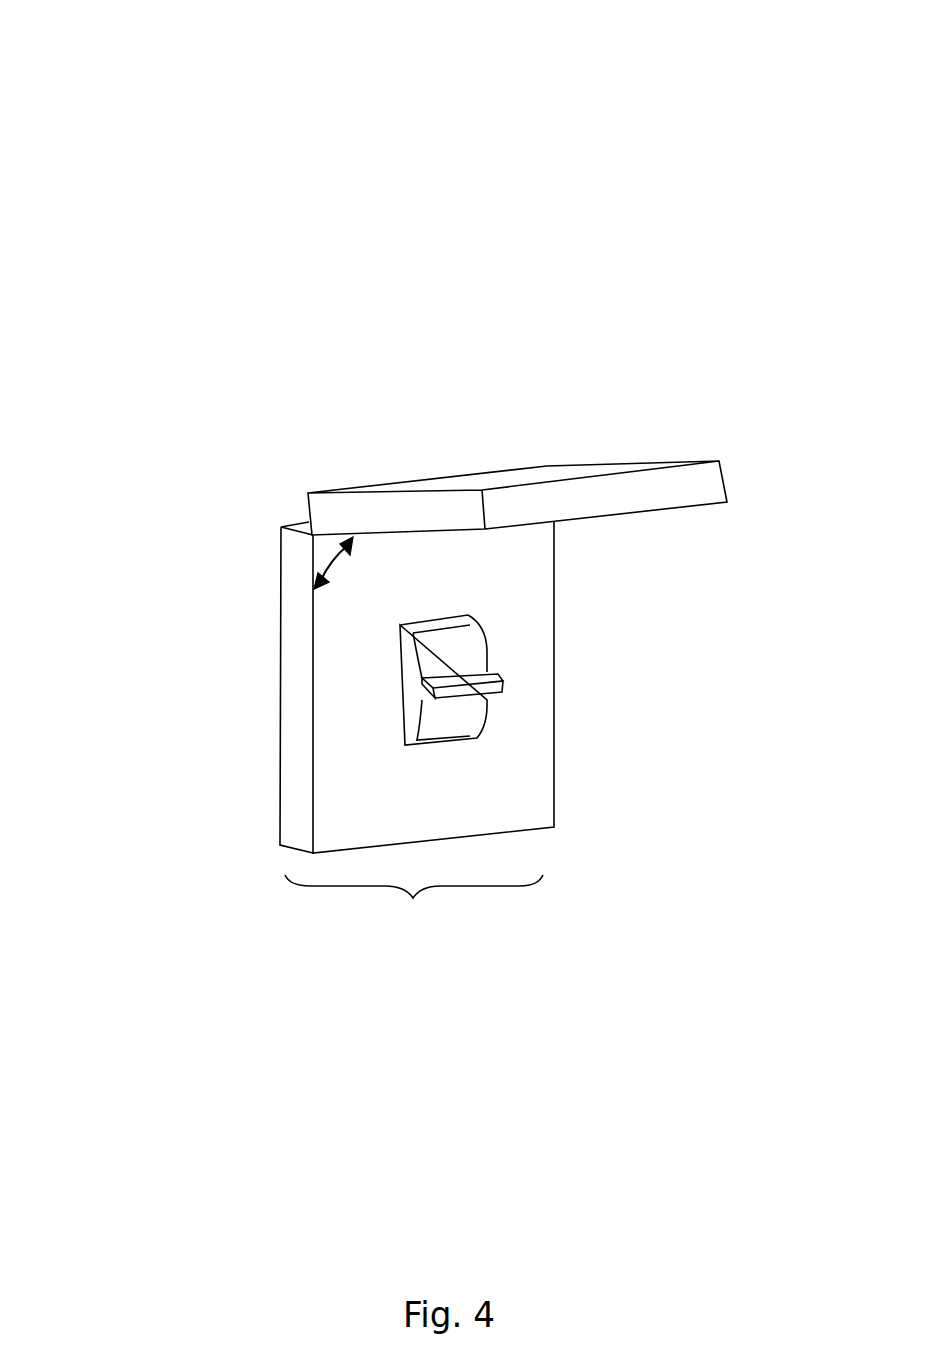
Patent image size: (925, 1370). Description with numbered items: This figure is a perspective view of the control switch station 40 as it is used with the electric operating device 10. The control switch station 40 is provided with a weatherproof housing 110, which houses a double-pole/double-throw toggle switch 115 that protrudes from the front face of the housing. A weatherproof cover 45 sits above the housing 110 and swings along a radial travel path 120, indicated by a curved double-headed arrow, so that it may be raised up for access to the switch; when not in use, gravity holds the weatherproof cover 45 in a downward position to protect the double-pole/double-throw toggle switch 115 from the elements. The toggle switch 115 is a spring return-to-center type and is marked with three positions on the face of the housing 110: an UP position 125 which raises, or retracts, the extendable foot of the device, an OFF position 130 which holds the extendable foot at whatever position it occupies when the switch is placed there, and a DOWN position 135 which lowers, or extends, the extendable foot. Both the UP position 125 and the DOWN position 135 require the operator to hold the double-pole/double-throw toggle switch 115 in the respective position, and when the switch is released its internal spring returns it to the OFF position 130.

The device 10 is at (115, 187).
The control switch station 40 is at (413, 898).
The weatherproof cover 45 is at (578, 463).
The weatherproof housing 110 is at (280, 538).
The double-pole/double-throw toggle switch 115 is at (422, 692).
The radial travel path 120 is at (321, 591).
The UP position 125 is at (535, 588).
The OFF position 130 is at (555, 670).
The DOWN position 135 is at (555, 753).